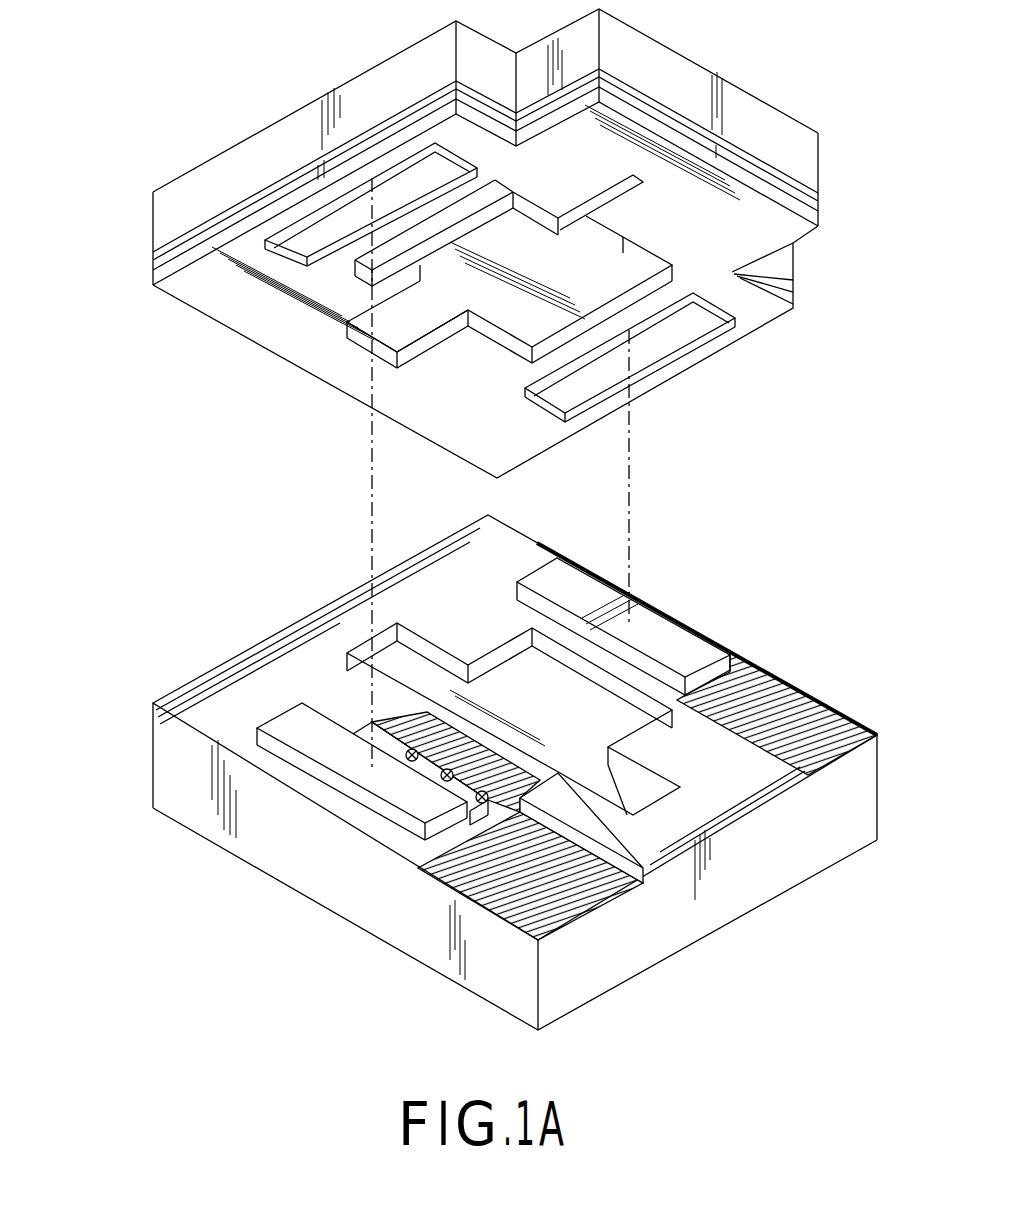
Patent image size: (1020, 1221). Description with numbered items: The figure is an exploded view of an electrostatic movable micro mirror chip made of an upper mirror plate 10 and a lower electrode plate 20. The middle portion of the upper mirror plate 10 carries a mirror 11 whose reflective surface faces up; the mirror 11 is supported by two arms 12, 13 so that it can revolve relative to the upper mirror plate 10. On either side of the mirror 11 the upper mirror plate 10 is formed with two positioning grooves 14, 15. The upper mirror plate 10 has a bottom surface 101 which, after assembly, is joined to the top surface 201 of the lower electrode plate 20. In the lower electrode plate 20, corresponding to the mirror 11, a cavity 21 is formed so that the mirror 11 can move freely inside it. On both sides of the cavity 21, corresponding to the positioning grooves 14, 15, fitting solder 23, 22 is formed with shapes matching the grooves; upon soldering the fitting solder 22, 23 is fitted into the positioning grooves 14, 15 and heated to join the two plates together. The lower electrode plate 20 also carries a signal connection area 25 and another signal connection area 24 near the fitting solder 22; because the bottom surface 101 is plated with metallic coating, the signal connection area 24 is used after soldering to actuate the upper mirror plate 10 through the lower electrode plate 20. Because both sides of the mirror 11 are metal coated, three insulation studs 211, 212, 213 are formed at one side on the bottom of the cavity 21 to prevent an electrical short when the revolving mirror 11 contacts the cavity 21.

The upper mirror plate 10 is at (431, 174).
The bottom surface 101 is at (296, 325).
The mirror 11 is at (502, 300).
The arm 12 is at (410, 368).
The arm 13 is at (638, 202).
The positioning groove 14 is at (293, 249).
The positioning groove 15 is at (660, 347).
The lower electrode plate 20 is at (467, 772).
The top surface 201 is at (317, 650).
The cavity 21 is at (612, 710).
The fitting solder 22 is at (593, 588).
The fitting solder 23 is at (297, 730).
The signal connection area 24 is at (830, 738).
The signal connection area 25 is at (553, 910).
The insulation stud 211 is at (477, 800).
The insulation stud 212 is at (441, 777).
The insulation stud 213 is at (406, 757).